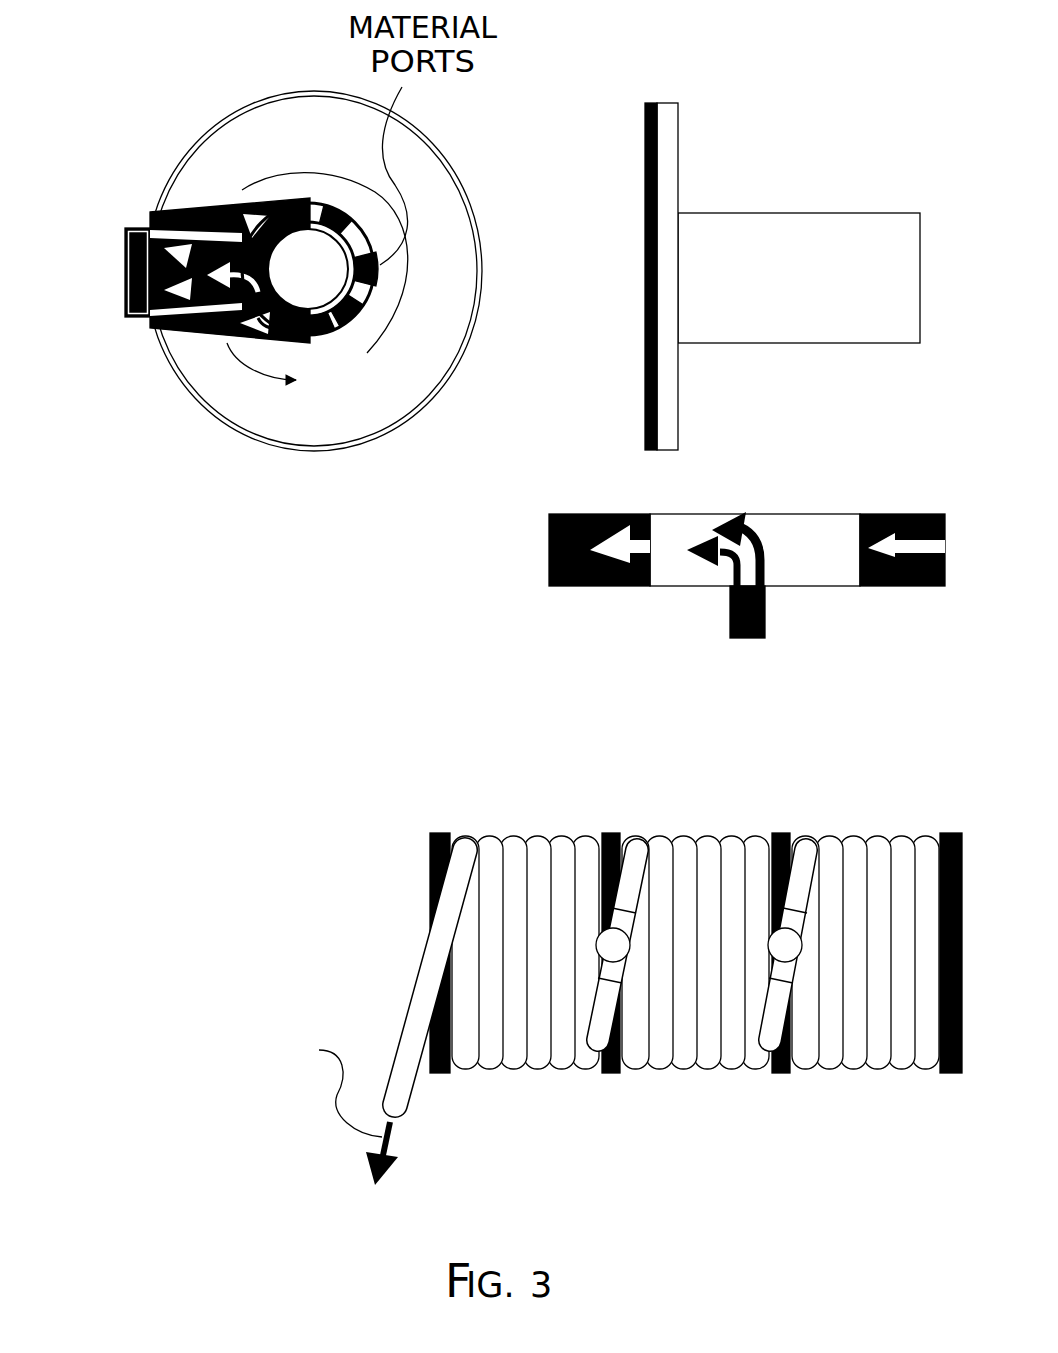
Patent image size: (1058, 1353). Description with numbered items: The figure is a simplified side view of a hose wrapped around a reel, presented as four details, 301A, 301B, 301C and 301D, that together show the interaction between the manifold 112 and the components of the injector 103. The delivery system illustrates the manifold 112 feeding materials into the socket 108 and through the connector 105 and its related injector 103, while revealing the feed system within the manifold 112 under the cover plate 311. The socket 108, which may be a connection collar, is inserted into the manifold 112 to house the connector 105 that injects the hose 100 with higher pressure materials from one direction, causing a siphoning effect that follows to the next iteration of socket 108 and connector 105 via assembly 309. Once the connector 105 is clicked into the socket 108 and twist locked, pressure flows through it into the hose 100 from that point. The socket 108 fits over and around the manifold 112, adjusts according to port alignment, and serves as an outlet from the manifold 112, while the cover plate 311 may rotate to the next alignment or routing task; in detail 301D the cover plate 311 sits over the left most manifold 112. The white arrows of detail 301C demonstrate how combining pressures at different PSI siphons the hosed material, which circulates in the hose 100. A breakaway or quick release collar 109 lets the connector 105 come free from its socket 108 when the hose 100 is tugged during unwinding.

The delivery system end view detail 301A is at (163, 90).
The delivery system side view detail 301B is at (818, 105).
The delivery system flow detail 301C is at (796, 482).
The delivery system reel detail 301D is at (205, 764).
The hose 100 is at (550, 567).
The injector 103 is at (728, 605).
The connector 105 is at (910, 587).
The socket 108 is at (304, 300).
The quick release collar 109 is at (788, 943).
The manifold 112 is at (365, 300).
The assembly 309 is at (712, 793).
The cover plate 311 is at (372, 414).